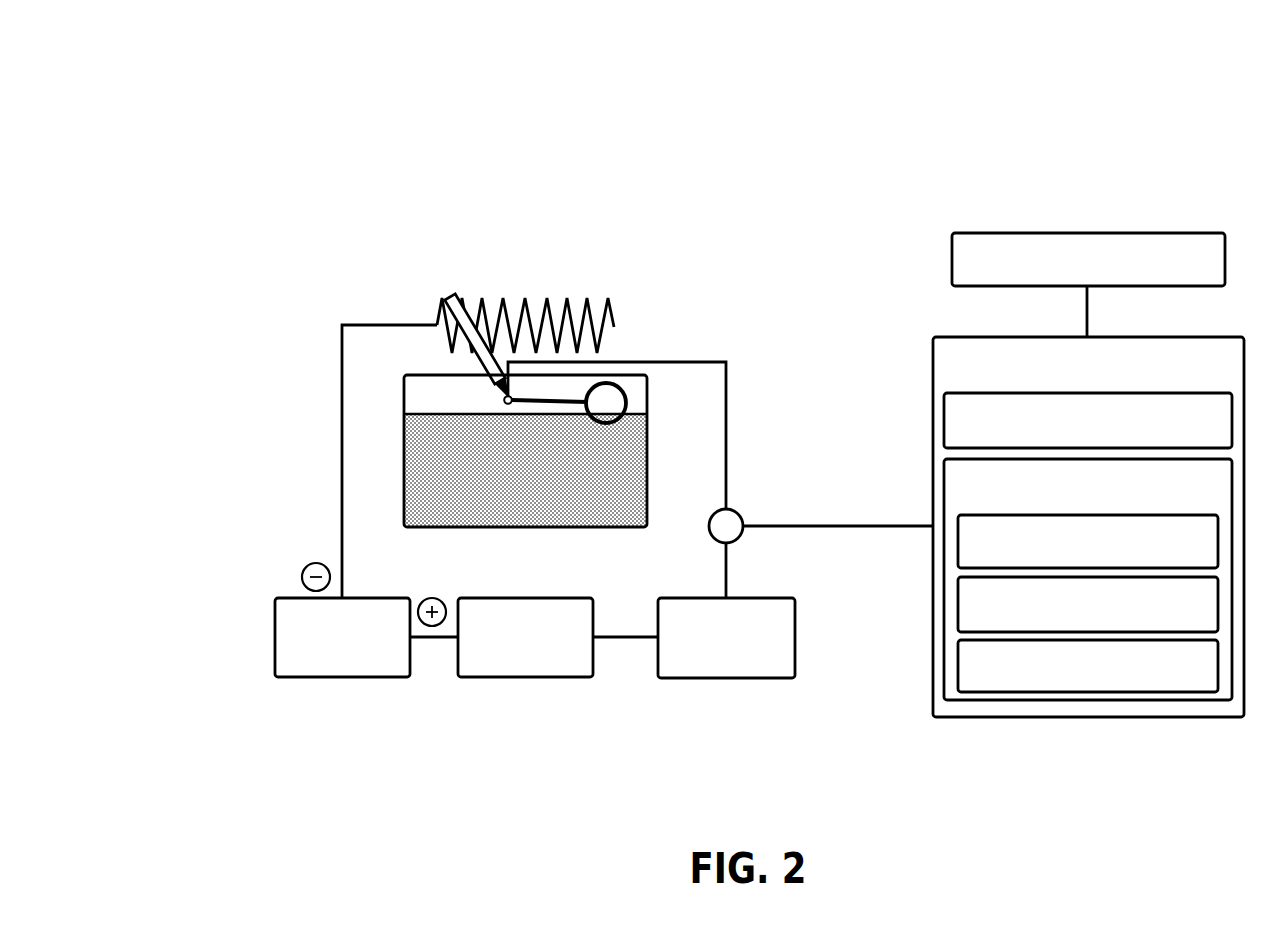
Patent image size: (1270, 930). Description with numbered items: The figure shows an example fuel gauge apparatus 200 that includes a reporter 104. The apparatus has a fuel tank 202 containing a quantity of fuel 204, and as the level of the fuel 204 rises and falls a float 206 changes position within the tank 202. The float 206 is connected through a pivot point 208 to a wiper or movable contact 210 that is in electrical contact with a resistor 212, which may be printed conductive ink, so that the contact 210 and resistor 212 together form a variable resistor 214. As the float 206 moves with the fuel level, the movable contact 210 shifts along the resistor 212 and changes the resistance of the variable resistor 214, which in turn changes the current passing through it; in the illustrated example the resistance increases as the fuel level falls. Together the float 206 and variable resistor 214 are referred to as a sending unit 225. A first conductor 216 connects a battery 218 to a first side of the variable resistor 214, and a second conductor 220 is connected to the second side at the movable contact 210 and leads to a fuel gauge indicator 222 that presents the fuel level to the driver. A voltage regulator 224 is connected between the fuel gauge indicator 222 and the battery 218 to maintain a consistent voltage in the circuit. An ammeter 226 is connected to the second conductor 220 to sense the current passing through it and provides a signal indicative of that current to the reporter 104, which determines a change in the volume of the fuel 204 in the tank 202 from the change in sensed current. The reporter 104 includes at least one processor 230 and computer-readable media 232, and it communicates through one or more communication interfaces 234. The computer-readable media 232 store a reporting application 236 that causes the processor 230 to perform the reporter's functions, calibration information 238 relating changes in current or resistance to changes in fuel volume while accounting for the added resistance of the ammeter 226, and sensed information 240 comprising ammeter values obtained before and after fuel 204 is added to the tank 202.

The fuel gauge apparatus 200 is at (146, 69).
The fuel tank 202 is at (648, 448).
The fuel 204 is at (422, 414).
The float 206 is at (627, 400).
The pivot point 208 is at (503, 398).
The movable contact 210 is at (451, 297).
The resistor 212 is at (592, 300).
The variable resistor 214 is at (461, 256).
The first conductor 216 is at (368, 324).
The battery 218 is at (366, 620).
The second conductor 220 is at (642, 362).
The fuel gauge indicator 222 is at (726, 638).
The voltage regulator 224 is at (558, 637).
The sending unit 225 is at (634, 206).
The ammeter 226 is at (741, 515).
The reporter 104 is at (1088, 527).
The processor 230 is at (1088, 420).
The computer-readable media 232 is at (1088, 579).
The communication interface(s) 234 is at (1088, 285).
The reporting application 236 is at (1088, 541).
The calibration information 238 is at (1088, 604).
The sensed information 240 is at (1088, 666).